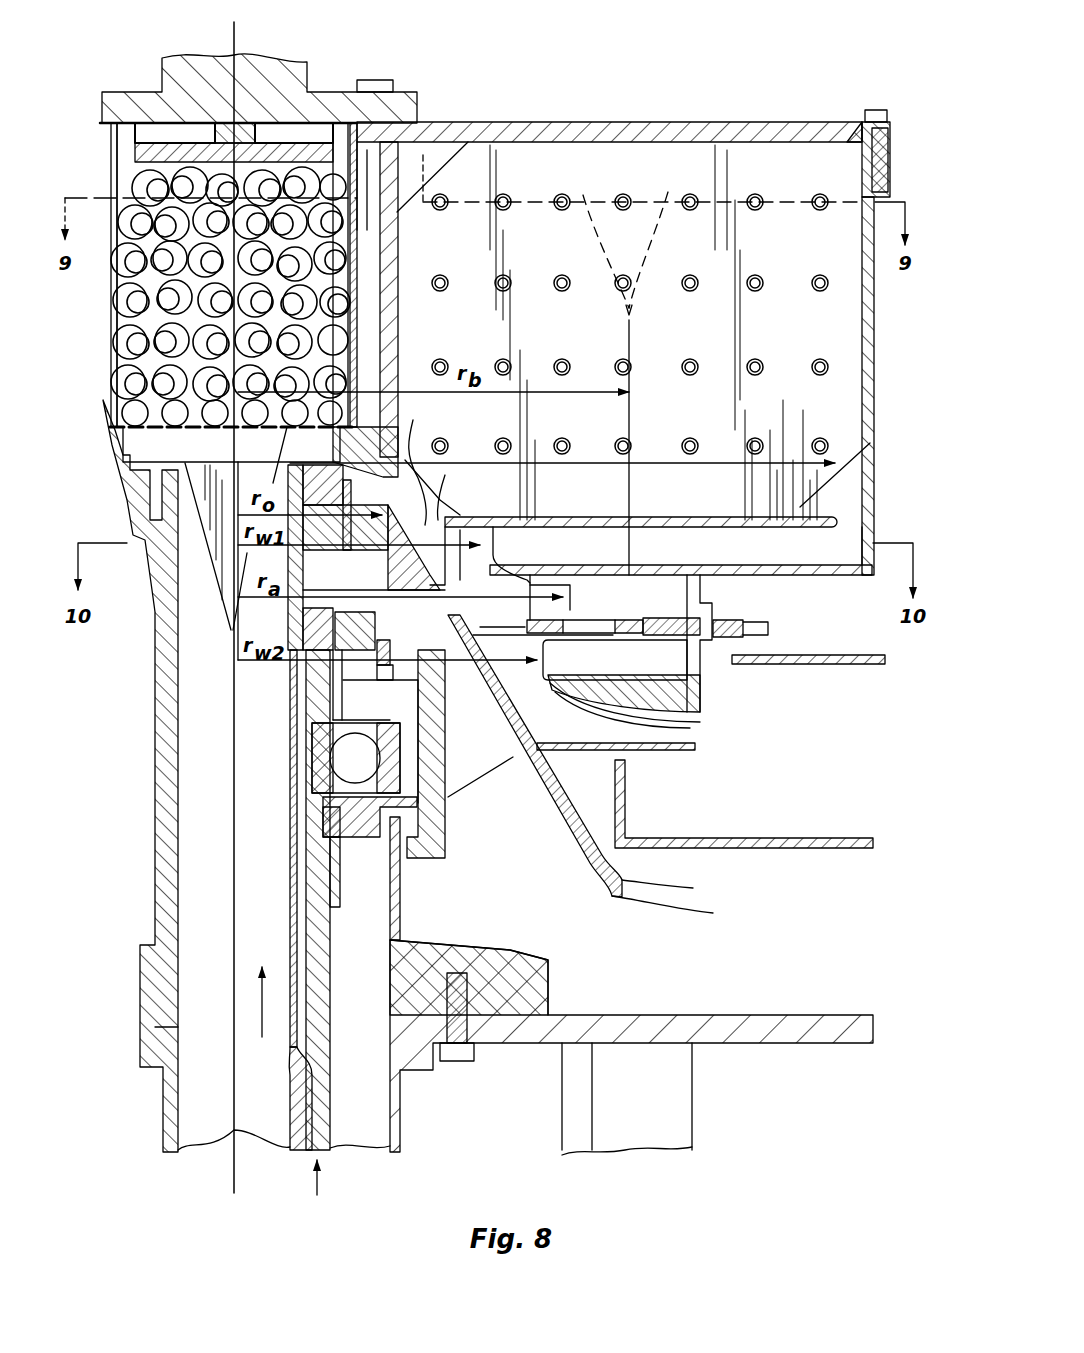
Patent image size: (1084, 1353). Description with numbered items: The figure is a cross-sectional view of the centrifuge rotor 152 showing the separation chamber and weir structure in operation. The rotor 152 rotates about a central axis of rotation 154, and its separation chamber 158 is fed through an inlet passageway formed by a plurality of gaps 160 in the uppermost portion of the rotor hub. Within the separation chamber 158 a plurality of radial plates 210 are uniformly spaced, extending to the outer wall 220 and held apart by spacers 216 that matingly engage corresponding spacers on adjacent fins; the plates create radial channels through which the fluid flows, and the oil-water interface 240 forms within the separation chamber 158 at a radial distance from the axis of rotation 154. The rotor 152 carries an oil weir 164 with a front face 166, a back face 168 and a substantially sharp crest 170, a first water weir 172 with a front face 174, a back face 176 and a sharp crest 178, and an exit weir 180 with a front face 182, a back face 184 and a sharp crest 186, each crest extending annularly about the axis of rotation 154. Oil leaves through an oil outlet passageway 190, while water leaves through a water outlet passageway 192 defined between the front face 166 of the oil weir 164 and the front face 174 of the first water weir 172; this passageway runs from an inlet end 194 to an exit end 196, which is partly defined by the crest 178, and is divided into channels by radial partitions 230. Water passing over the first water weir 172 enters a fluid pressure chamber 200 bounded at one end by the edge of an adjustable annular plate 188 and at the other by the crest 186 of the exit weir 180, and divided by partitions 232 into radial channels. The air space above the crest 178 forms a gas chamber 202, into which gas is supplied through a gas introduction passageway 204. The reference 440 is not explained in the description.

The rotor 152 is at (626, 115).
The central axis of rotation 154 is at (237, 35).
The separation chamber 158 is at (628, 331).
The gaps 160 is at (425, 118).
The oil weir 164 is at (448, 500).
The front face 166 is at (452, 512).
The back face 168 is at (457, 660).
The crest 170 is at (408, 462).
The first water weir 172 is at (562, 558).
The front face 174 is at (660, 565).
The back face 176 is at (620, 566).
The crest 178 is at (540, 548).
The exit weir 180 is at (574, 664).
The front face 182 is at (670, 718).
The back face 184 is at (640, 695).
The crest 186 is at (542, 682).
The annular plate 188 is at (546, 665).
The oil outlet passageway 190 is at (445, 460).
The water outlet passageway 192 is at (651, 551).
The inlet end 194 is at (847, 510).
The exit end 196 is at (548, 508).
The fluid pressure chamber 200 is at (647, 643).
The gas chamber 202 is at (394, 527).
The gas introduction passageway 204 is at (290, 800).
The radial plates 210 is at (832, 328).
The spacers 216 is at (755, 292).
The outer wall 220 is at (875, 468).
The radial partitions 230 is at (842, 538).
The partitions 232 is at (702, 692).
The interface 240 is at (629, 412).
The chamber 440 is at (458, 624).